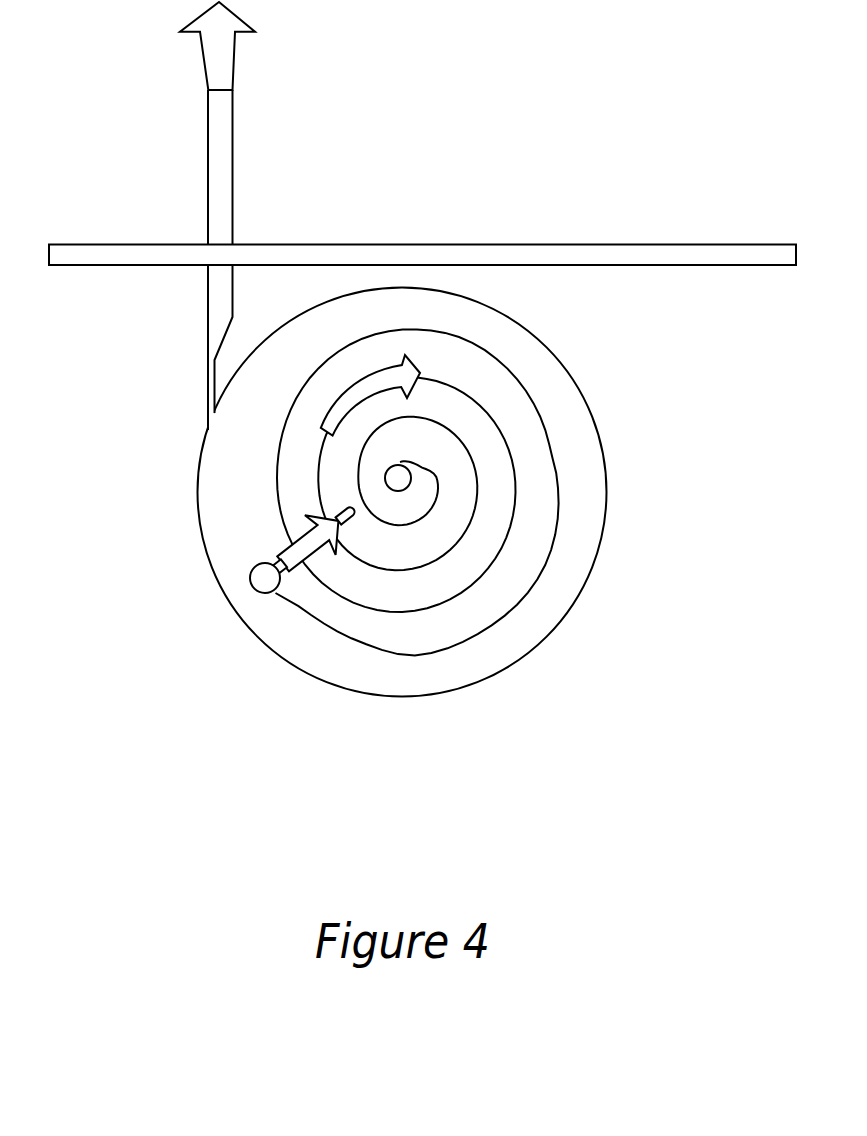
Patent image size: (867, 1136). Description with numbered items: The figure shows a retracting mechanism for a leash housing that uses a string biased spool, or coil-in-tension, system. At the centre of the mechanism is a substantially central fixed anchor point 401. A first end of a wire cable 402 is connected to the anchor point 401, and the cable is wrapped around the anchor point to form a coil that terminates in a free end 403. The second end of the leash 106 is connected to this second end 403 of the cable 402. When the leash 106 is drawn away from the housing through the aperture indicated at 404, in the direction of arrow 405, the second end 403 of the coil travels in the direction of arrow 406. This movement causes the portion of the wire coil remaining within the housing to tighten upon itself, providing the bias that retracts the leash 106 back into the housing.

The leash 106 is at (213, 243).
The fixed anchor point 401 is at (400, 477).
The wire cable 402 is at (507, 612).
The free end of cable 403 is at (267, 573).
The aperture 404 is at (184, 422).
The arrow indicating leash direction 405 is at (232, 43).
The arrow indicating coil end travel direction 406 is at (420, 373).